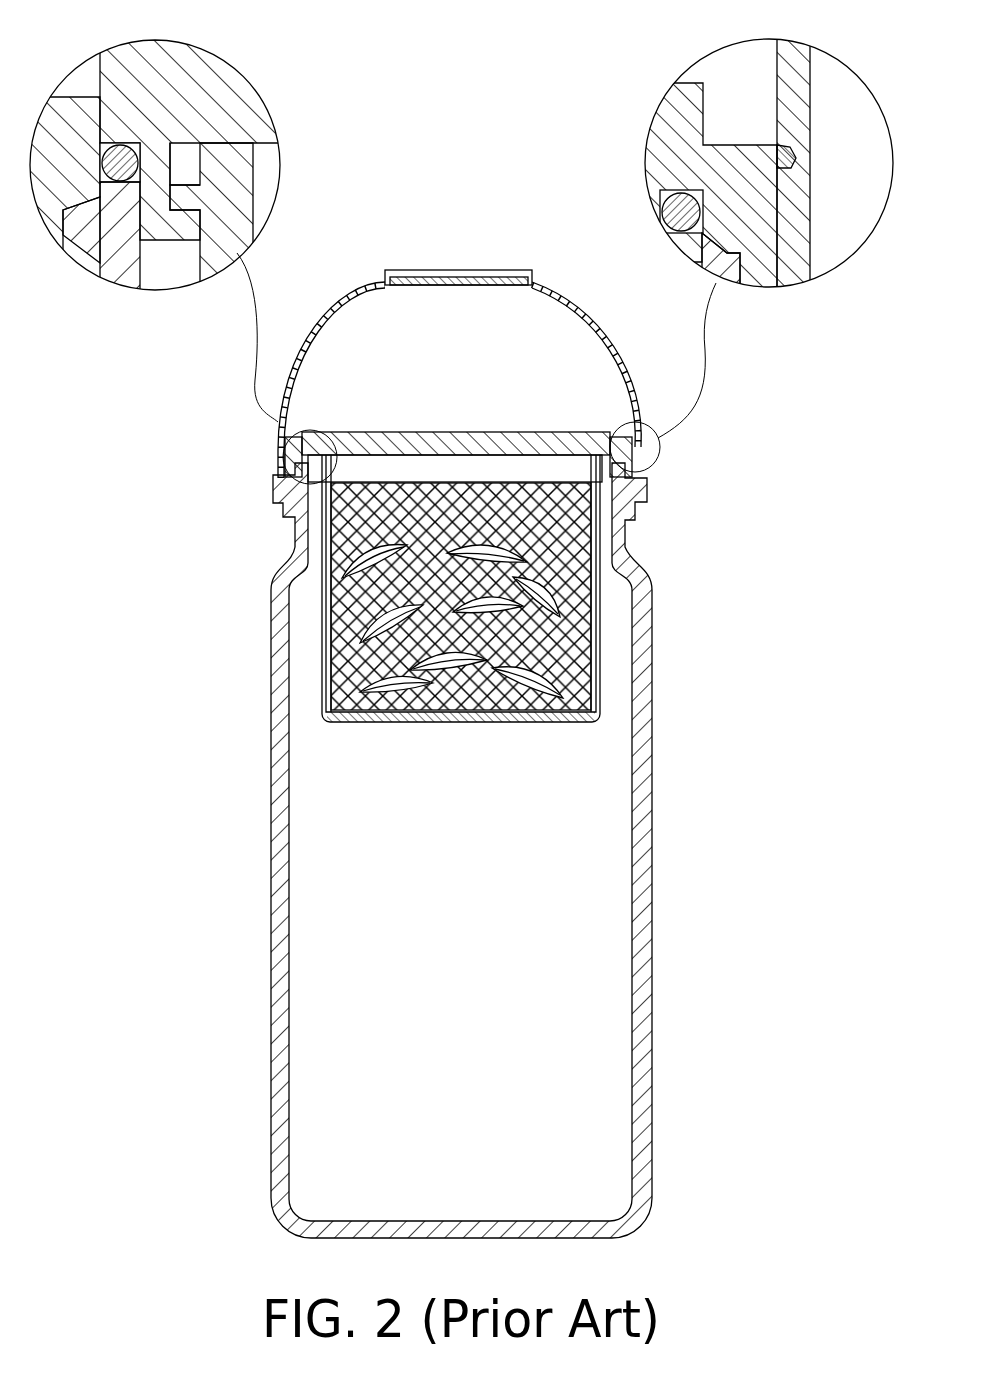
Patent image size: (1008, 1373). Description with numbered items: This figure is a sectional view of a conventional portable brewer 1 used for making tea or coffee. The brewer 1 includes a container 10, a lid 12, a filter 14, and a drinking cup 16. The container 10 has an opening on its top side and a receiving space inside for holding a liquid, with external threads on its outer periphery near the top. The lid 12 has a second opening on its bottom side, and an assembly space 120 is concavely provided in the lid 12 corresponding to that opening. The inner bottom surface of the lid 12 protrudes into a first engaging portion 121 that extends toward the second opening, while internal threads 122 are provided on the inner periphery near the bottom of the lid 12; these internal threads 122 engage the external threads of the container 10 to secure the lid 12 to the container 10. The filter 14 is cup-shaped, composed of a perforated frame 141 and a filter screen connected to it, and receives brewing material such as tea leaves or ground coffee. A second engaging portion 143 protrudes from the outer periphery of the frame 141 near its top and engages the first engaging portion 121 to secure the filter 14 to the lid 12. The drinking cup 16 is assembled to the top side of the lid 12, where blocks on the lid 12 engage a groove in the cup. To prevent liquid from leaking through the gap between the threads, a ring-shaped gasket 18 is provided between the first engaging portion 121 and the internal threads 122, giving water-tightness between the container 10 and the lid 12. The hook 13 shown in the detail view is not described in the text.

The brewer 1 is at (803, 477).
The container 10 is at (652, 838).
The lid 12 is at (243, 100).
The assembly space 120 is at (474, 468).
The first engaging portion 121 is at (175, 241).
The internal threads 122 is at (648, 512).
The hook 13 is at (796, 156).
The filter 14 is at (602, 668).
The frame 141 is at (243, 210).
The second engaging portion 143 is at (180, 186).
The drinking cup 16 is at (568, 300).
The gasket 18 is at (120, 173).